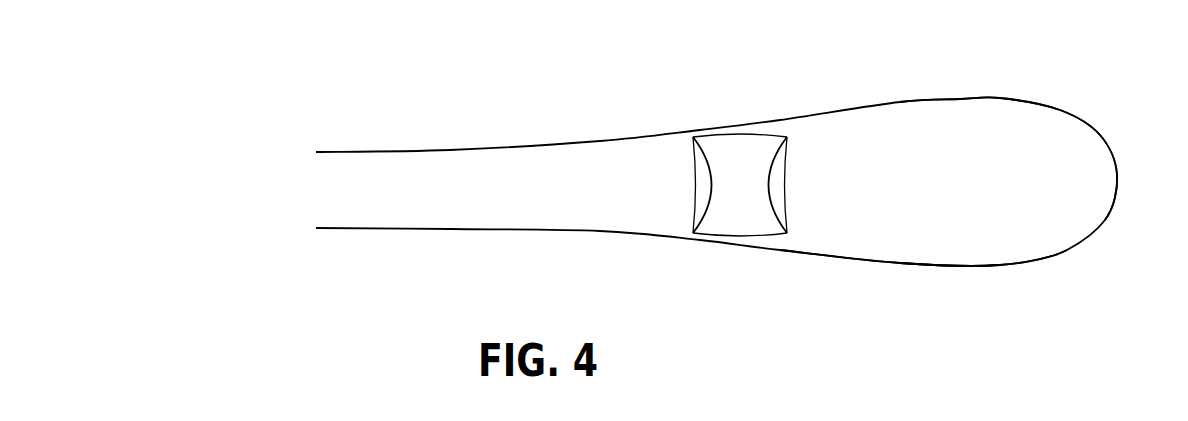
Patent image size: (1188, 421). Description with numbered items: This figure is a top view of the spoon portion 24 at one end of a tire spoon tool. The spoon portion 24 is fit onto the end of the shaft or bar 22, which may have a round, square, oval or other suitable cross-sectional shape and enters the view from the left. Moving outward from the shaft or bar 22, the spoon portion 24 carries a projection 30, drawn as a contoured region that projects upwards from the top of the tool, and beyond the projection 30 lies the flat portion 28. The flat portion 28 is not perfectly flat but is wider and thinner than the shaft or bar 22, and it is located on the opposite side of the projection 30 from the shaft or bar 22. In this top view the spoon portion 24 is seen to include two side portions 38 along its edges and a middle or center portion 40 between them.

The shaft or bar 22 is at (351, 152).
The spoon portion 24 is at (959, 73).
The flat portion 28 is at (902, 218).
The projection 30 is at (738, 167).
The side portion 38 is at (995, 97).
The middle or center portion 40 is at (945, 182).